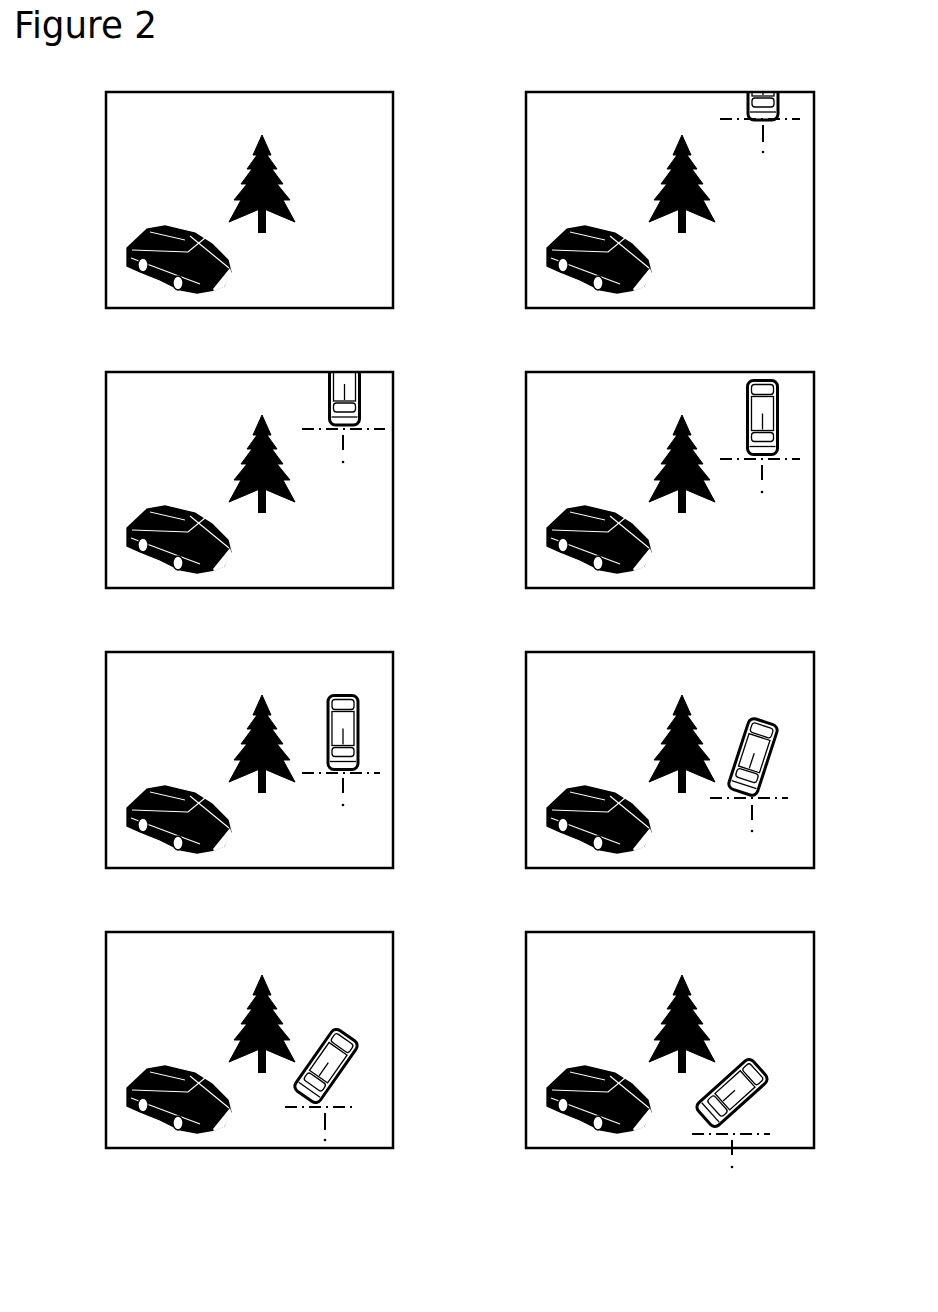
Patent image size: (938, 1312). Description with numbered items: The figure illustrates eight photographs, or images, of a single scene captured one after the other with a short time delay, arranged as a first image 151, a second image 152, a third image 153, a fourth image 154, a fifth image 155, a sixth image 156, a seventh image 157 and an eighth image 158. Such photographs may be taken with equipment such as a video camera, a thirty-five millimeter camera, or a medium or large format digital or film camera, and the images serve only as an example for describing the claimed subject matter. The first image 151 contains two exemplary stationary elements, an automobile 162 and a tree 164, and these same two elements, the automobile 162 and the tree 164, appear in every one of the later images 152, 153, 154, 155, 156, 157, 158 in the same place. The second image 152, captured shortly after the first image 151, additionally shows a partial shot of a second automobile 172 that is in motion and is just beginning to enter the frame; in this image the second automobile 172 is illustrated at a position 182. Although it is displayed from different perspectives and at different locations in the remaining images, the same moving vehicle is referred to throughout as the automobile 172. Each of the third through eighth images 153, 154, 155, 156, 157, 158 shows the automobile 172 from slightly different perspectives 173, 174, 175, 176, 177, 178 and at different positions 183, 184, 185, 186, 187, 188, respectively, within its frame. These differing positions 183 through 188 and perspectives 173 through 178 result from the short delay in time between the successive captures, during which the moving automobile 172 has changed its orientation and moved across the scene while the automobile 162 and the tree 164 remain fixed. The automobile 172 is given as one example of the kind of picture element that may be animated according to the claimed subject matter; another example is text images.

The first image 151 is at (106, 152).
The second image 152 is at (526, 152).
The third image 153 is at (106, 432).
The fourth image 154 is at (526, 432).
The fifth image 155 is at (106, 712).
The sixth image 156 is at (526, 712).
The seventh image 157 is at (106, 992).
The eighth image 158 is at (526, 992).
The automobile 162 is at (127, 252).
The tree 164 is at (248, 207).
The second automobile 172 is at (762, 92).
The perspective of second automobile in third image 173 is at (360, 397).
The perspective of second automobile in fourth image 174 is at (778, 412).
The perspective of second automobile in fifth image 175 is at (358, 728).
The perspective of second automobile in sixth image 176 is at (772, 753).
The perspective of second automobile in seventh image 177 is at (348, 1062).
The perspective of second automobile in eighth image 178 is at (763, 1087).
The position of second automobile in second image 182 is at (803, 119).
The position of second automobile in third image 183 is at (380, 429).
The position of second automobile in fourth image 184 is at (800, 459).
The position of second automobile in fifth image 185 is at (380, 773).
The position of second automobile in sixth image 186 is at (790, 798).
The position of second automobile in seventh image 187 is at (360, 1107).
The position of second automobile in eighth image 188 is at (772, 1134).